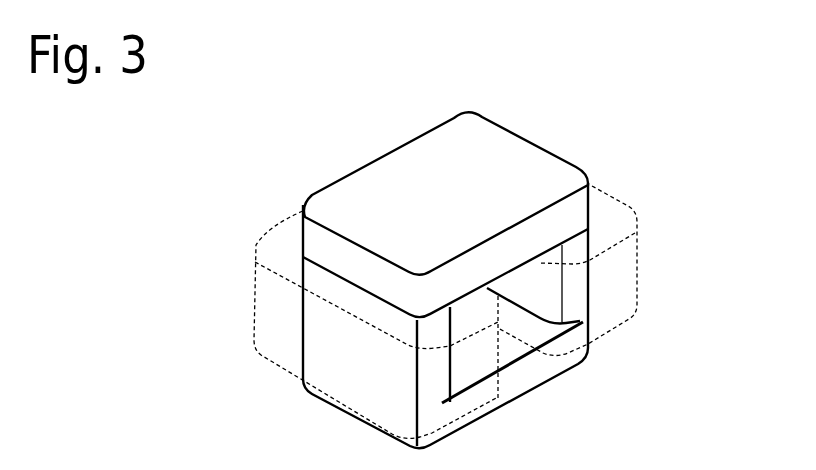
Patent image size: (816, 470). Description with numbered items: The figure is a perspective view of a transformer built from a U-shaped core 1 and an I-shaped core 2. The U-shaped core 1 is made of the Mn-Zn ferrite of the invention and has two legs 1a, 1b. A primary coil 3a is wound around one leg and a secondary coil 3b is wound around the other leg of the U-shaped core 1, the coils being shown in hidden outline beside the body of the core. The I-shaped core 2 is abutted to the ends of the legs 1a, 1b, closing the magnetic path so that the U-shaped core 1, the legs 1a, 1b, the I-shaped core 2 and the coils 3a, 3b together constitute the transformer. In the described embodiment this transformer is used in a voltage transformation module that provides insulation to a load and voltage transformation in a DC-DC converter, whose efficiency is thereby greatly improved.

The U-shaped core 1 is at (553, 371).
The leg 1a is at (580, 283).
The leg 1b is at (327, 323).
The I-shaped core 2 is at (358, 177).
The primary coil 3a is at (608, 204).
The secondary coil 3b is at (280, 234).